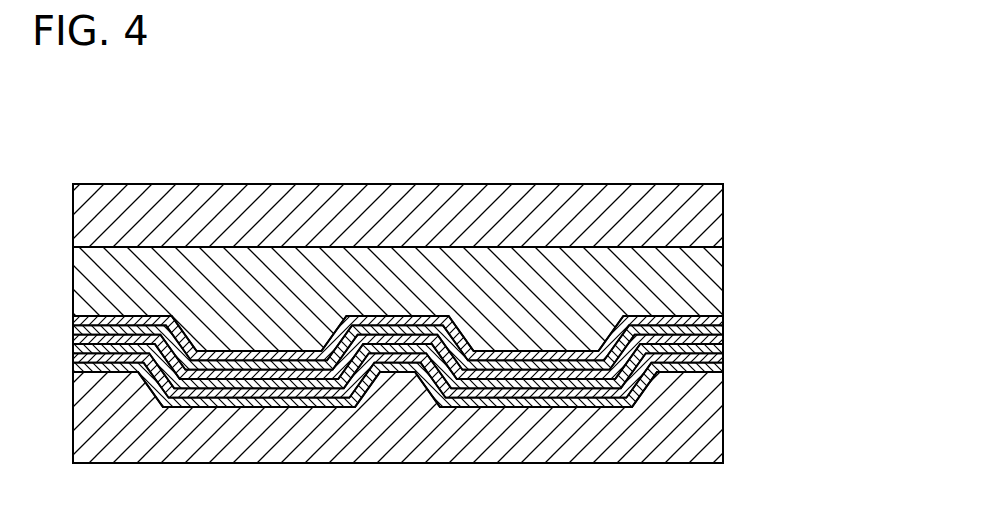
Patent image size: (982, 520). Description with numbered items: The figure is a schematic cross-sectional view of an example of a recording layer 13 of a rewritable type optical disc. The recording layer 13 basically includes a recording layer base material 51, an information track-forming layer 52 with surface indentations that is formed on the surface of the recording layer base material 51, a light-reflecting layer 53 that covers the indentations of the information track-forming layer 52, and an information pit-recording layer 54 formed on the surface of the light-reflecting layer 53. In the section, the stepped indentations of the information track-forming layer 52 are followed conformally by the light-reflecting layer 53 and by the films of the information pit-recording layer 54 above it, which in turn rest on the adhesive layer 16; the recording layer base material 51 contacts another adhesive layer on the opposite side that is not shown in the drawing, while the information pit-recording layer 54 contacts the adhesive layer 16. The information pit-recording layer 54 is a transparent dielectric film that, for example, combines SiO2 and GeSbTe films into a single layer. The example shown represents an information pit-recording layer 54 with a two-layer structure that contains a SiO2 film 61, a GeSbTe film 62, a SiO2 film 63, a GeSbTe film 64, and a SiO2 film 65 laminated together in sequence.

The recording layer 13 is at (471, 180).
The recording layer base material 51 is at (724, 208).
The information track-forming layer 52 is at (724, 268).
The light-reflecting layer 53 is at (724, 315).
The information pit-recording layer 54 is at (481, 356).
The SiO2 film 61 is at (724, 323).
The GeSbTe film 62 is at (724, 335).
The SiO2 film 63 is at (724, 350).
The GeSbTe film 64 is at (724, 363).
The SiO2 film 65 is at (454, 388).
The adhesive layer 16 is at (724, 412).